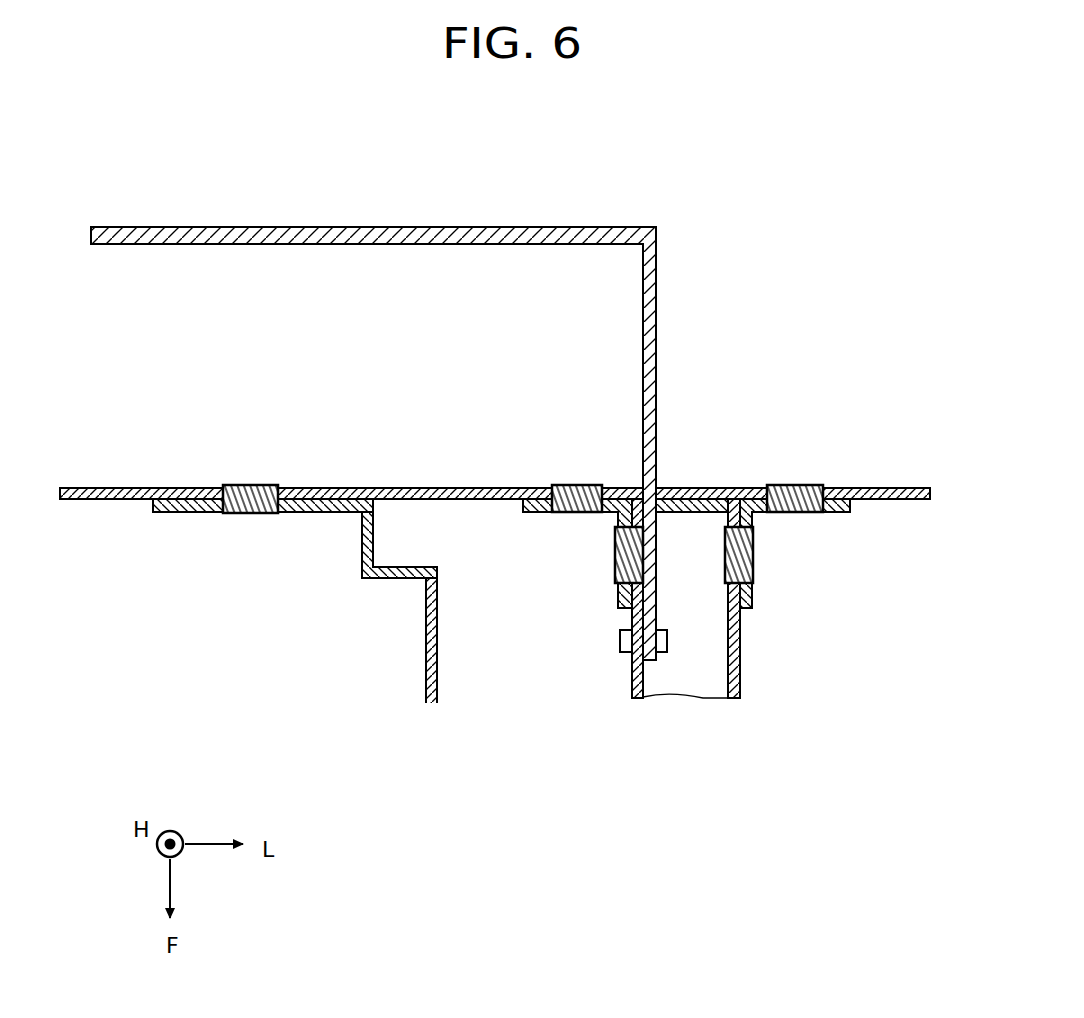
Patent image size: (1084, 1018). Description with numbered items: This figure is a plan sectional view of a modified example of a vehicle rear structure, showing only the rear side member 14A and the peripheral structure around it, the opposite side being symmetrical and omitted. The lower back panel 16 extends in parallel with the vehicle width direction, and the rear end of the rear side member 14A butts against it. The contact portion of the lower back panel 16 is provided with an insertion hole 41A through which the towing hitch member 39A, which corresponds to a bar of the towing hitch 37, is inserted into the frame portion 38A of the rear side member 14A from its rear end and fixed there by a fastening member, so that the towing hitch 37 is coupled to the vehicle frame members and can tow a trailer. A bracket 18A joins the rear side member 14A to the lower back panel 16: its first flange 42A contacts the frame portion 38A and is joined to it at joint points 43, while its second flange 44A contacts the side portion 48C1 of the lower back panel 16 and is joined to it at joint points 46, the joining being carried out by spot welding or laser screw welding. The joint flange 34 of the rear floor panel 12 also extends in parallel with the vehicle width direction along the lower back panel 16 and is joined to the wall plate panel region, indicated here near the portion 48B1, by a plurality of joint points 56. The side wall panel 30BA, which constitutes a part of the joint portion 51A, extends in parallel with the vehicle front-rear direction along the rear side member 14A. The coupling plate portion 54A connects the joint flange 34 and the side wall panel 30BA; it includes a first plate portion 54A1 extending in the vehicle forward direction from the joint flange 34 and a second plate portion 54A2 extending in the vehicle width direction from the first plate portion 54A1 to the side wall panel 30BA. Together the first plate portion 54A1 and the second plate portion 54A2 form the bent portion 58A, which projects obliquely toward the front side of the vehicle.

The towing hitch 37 is at (419, 394).
The towing hitch member 39A is at (654, 357).
The lower back panel 16 is at (857, 482).
The first flange portion 48B1 is at (88, 489).
The side portion 48C1 is at (440, 488).
The joint points 56 is at (258, 485).
The joint flange 34 is at (191, 513).
The first plate portion 54A1 is at (374, 517).
The second plate portion 54A2 is at (417, 554).
The coupling plate portion 54A is at (472, 504).
The bent portion 58A is at (410, 577).
The rear floor panel 12 is at (380, 677).
The side wall panel 30BA is at (438, 679).
The joint portion 51A is at (422, 661).
The second flange 44A is at (532, 498).
The joint points 46 is at (574, 485).
The insertion hole 41A is at (660, 490).
The joint points 43 is at (616, 553).
The first flange 42A is at (618, 602).
The bracket 18A is at (618, 594).
The frame portion 38A is at (630, 679).
The rear side member 14A is at (683, 680).